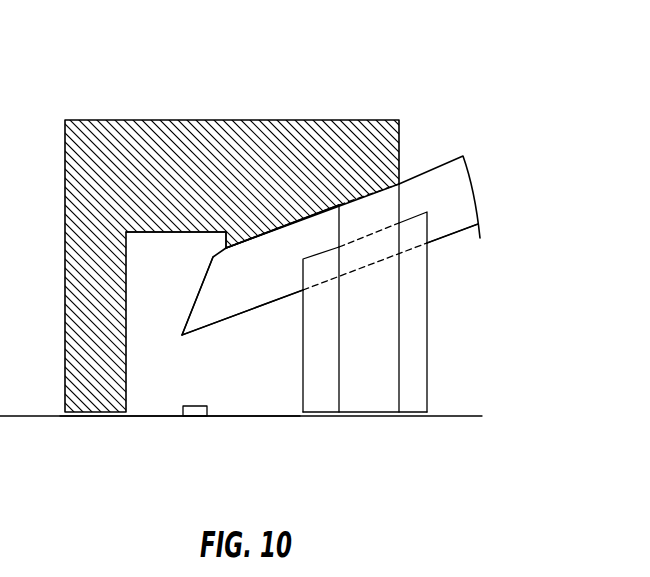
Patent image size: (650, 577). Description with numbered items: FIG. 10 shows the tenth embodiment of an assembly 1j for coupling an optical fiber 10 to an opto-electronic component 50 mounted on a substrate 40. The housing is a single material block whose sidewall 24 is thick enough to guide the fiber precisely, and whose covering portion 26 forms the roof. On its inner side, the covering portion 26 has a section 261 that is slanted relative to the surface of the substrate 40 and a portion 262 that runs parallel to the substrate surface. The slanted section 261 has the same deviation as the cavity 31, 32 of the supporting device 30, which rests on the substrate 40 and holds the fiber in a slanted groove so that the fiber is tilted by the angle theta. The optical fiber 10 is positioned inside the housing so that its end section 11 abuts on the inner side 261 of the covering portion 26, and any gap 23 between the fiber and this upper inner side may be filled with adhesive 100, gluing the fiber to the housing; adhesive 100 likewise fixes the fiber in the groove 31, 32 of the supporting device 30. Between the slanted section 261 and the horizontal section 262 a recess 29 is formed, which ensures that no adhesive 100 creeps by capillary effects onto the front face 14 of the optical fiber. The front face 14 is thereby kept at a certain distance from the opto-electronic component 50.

The assembly 1j is at (200, 78).
The optical fiber 10 is at (446, 170).
The end section of the optical fiber 11 is at (243, 302).
The front face of the optical fiber 14 is at (193, 305).
The gap 23 is at (305, 217).
The sidewall 24 is at (378, 332).
The covering portion 26 is at (77, 165).
The recess 29 is at (228, 243).
The supporting device 30 is at (415, 302).
The groove 31 is at (481, 246).
The groove 32 is at (412, 233).
The substrate 40 is at (159, 416).
The opto-electronic component 50 is at (190, 405).
The adhesive 100 is at (397, 182).
The slanted section of the covering portion 261 is at (337, 203).
The horizontal section of the covering portion 262 is at (149, 233).